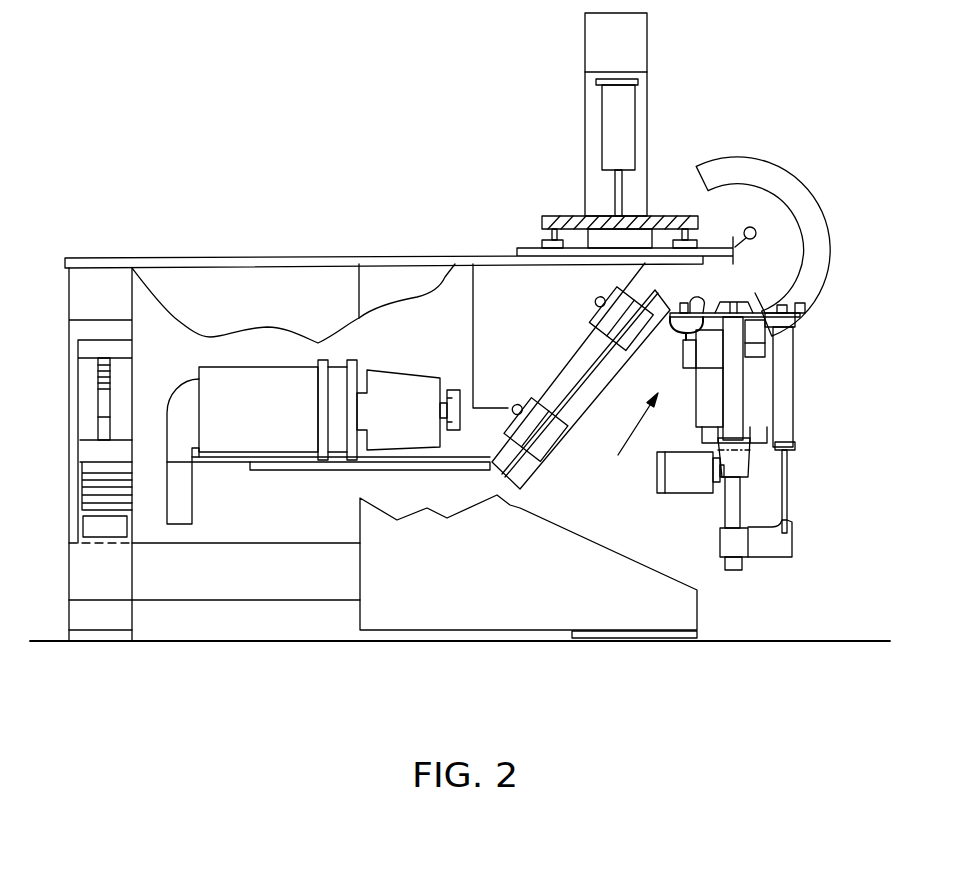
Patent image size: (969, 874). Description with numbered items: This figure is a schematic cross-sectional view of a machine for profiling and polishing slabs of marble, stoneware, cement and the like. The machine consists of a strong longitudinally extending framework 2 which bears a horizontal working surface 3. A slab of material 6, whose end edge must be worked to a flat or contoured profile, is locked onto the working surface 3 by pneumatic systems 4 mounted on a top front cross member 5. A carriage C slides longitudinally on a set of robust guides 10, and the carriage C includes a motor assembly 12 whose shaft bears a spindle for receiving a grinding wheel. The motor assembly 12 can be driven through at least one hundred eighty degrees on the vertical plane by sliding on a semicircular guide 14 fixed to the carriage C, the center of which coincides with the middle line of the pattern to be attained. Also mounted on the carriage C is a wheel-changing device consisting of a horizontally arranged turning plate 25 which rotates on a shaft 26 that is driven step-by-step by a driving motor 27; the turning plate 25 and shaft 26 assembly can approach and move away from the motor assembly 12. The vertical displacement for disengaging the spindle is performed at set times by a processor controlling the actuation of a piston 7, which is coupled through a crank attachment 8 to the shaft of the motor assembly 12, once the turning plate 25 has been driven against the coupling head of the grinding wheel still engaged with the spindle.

The framework 2 is at (297, 583).
The horizontal working surface 3 is at (197, 263).
The pneumatic systems 4 is at (622, 128).
The top front cross member 5 is at (633, 43).
The slab of material 6 is at (558, 215).
The piston 7 is at (787, 423).
The crank attachment 8 is at (777, 543).
The guides 10 is at (555, 447).
The motor assembly 12 is at (760, 407).
The semicircular guide 14 is at (767, 172).
The turning plate 25 is at (755, 293).
The shaft 26 is at (733, 380).
The driving motor 27 is at (680, 483).
The carriage C is at (632, 438).